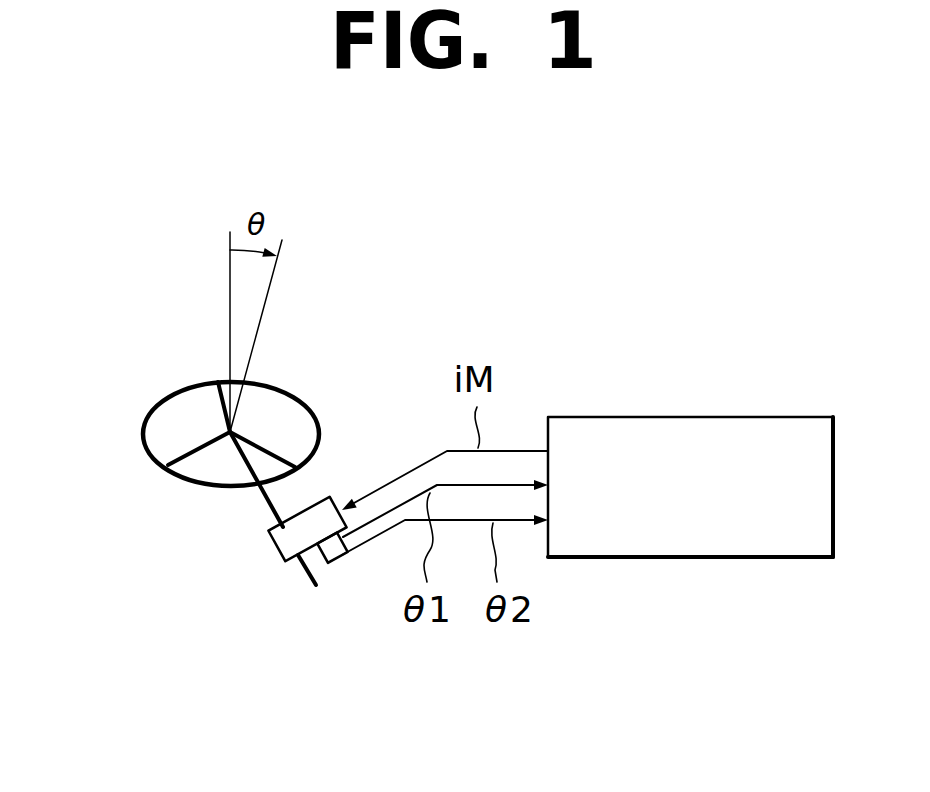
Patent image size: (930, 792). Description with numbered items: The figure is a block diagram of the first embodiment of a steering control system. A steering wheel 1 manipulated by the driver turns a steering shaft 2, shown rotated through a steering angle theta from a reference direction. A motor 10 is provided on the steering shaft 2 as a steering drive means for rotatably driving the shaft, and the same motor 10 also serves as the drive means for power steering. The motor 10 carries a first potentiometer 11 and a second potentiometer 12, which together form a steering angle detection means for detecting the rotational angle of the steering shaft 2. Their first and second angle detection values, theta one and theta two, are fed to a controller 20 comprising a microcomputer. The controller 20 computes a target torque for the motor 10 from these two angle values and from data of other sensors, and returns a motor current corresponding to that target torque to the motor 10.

The steering wheel 1 is at (141, 433).
The steering shaft 2 is at (276, 516).
The motor 10 is at (277, 551).
The first potentiometer 11 is at (305, 557).
The second potentiometer 12 is at (337, 563).
The controller 20 is at (725, 417).